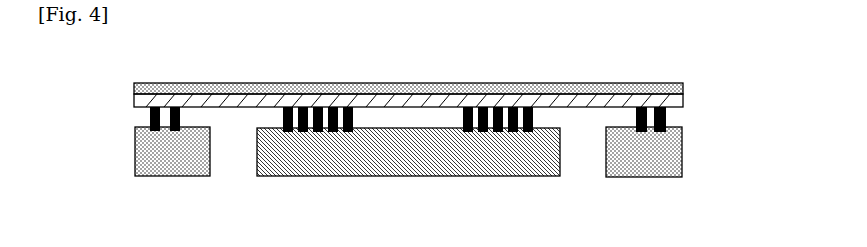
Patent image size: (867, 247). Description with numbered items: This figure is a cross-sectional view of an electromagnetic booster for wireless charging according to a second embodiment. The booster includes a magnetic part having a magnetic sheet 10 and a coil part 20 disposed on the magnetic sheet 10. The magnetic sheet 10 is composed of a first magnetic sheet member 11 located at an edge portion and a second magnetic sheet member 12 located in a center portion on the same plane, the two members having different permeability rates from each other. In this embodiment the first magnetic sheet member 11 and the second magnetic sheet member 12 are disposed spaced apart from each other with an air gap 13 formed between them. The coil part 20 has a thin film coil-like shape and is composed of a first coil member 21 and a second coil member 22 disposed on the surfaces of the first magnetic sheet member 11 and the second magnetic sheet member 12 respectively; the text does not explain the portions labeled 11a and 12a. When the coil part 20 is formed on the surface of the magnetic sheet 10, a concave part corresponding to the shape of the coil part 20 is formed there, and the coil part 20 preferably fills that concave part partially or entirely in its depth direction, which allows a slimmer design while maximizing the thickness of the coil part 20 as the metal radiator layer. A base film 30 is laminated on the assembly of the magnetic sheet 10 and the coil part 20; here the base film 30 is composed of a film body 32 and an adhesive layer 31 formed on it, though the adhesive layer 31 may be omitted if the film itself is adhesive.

The magnetic sheet 10 is at (439, 184).
The first magnetic sheet member 11 is at (193, 163).
The electrode of first semiconductor chip 11a is at (157, 130).
The second magnetic sheet member 12 is at (403, 163).
The electrode of second semiconductor chip 12a is at (322, 131).
The air gap 13 is at (230, 153).
The coil part 20 is at (461, 83).
The first coil member 21 is at (181, 118).
The second coil member 22 is at (292, 83).
The base film 30 is at (362, 81).
The adhesive layer 31 is at (133, 88).
The film body 32 is at (133, 103).